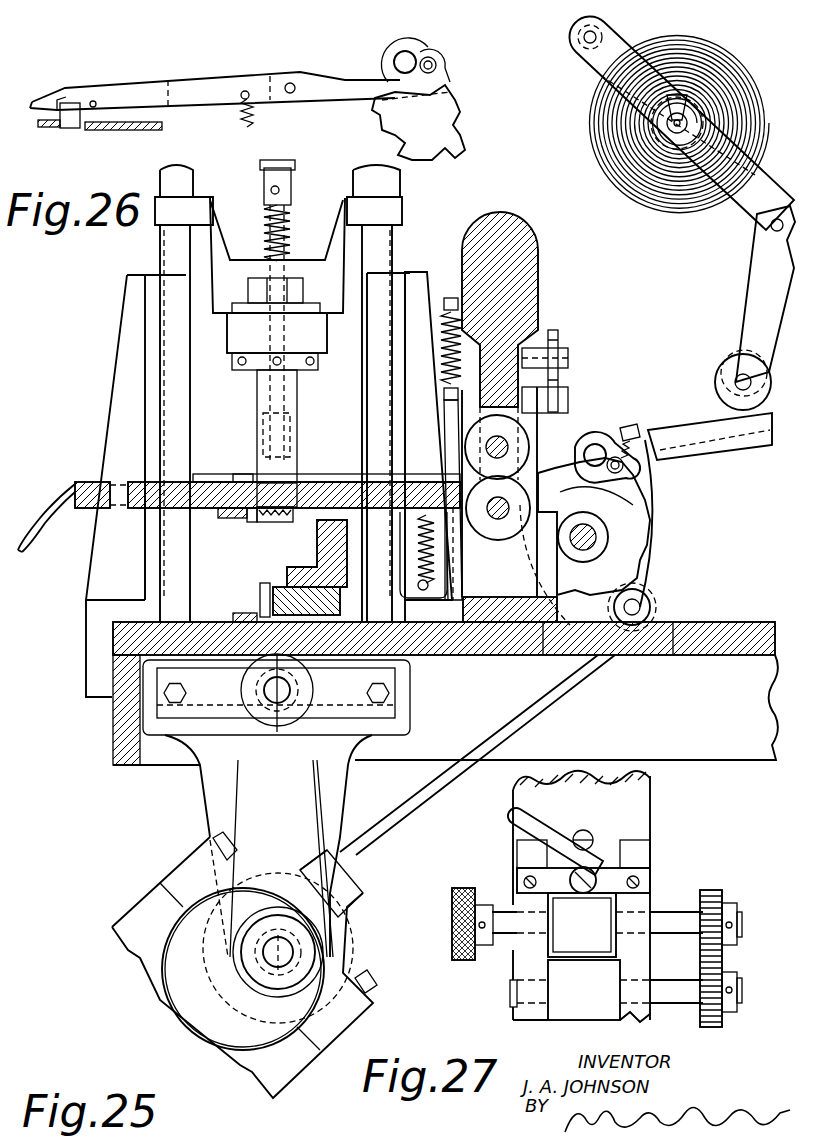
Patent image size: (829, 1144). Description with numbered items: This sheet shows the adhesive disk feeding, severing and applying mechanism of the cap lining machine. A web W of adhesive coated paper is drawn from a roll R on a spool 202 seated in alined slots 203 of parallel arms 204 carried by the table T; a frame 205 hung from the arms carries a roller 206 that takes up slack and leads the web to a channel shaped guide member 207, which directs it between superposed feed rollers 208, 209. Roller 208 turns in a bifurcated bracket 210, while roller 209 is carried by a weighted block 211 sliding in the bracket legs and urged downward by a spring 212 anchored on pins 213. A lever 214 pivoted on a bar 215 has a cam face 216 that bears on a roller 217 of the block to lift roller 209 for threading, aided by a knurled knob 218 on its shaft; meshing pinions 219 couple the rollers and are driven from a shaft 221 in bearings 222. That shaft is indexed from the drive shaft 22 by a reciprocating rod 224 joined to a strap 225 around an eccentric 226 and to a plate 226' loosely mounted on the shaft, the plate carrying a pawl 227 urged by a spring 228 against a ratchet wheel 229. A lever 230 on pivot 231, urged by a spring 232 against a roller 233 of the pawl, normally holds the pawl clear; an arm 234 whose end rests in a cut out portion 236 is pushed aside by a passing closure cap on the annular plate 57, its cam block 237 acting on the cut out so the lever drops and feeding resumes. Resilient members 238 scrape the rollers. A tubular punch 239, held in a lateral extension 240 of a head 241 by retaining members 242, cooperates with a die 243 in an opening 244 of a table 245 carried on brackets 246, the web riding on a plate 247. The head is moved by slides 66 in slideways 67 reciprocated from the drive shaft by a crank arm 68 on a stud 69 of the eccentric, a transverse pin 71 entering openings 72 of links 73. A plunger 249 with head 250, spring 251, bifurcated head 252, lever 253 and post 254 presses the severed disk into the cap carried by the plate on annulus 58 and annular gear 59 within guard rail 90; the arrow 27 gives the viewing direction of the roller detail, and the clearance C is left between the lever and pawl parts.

In FIG. 25, the drive shaft 22 is at (318, 971).
In FIG. 25, the arrow 27 is at (598, 381).
In FIG. 26, the annular plate 57 is at (123, 129).
In FIG. 25, the annular plate 57 is at (258, 523).
In FIG. 25, the annulus 58 is at (325, 551).
In FIG. 25, the annular gear 59 is at (292, 605).
In FIG. 25, the slides 66 is at (160, 247).
In FIG. 25, the slideways 67 is at (130, 352).
In FIG. 25, the crank arm 68 is at (260, 793).
In FIG. 25, the stud 69 is at (283, 953).
In FIG. 25, the transverse pin 71 is at (278, 698).
In FIG. 25, the alined openings 72 is at (297, 690).
In FIG. 25, the lever bars or links 73 is at (223, 710).
In FIG. 25, the annular guard rail 90 is at (263, 585).
In FIG. 25, the spool 202 is at (712, 52).
In FIG. 25, the slots 203 is at (667, 96).
In FIG. 25, the parallel arms 204 is at (733, 200).
In FIG. 25, the frame 205 is at (757, 296).
In FIG. 25, the roller 206 is at (733, 370).
In FIG. 25, the channel shaped guide member 207 is at (730, 433).
In FIG. 25, the feed roller 208 is at (502, 533).
In FIG. 27, the feed roller 208 is at (570, 1008).
In FIG. 25, the feed roller 209 is at (522, 438).
In FIG. 27, the feed roller 209 is at (575, 942).
In FIG. 25, the bifurcated bracket 210 is at (517, 604).
In FIG. 27, the bifurcated bracket 210 is at (647, 1017).
In FIG. 25, the weighted block 211 is at (530, 284).
In FIG. 27, the weighted block 211 is at (651, 807).
In FIG. 25, the spring 212 is at (420, 310).
In FIG. 25, the pins 213 is at (447, 333).
In FIG. 25, the lever 214 is at (555, 380).
In FIG. 27, the lever 214 is at (522, 822).
In FIG. 25, the bar 215 is at (552, 417).
In FIG. 27, the bar 215 is at (637, 872).
In FIG. 27, the cam face 216 is at (593, 868).
In FIG. 25, the roller 217 is at (533, 343).
In FIG. 27, the roller 217 is at (581, 838).
In FIG. 27, the knurled knob 218 is at (453, 893).
In FIG. 27, the pinions 219 is at (723, 947).
In FIG. 25, the shaft 221 is at (600, 537).
In FIG. 25, the bearings 222 is at (600, 553).
In FIG. 25, the reciprocating rod 224 is at (410, 836).
In FIG. 25, the strap 225 is at (185, 877).
In FIG. 25, the eccentric 226 is at (201, 969).
In FIG. 25, the plate 226' is at (658, 477).
In FIG. 26, the pawl 227 is at (418, 54).
In FIG. 25, the pawl 227 is at (628, 474).
In FIG. 25, the spring 228 is at (616, 428).
In FIG. 26, the ratchet wheel 229 is at (454, 135).
In FIG. 25, the ratchet wheel 229 is at (622, 525).
In FIG. 26, the lever 230 is at (140, 88).
In FIG. 25, the lever 230 is at (305, 480).
In FIG. 26, the pivot 231 is at (292, 83).
In FIG. 26, the spring 232 is at (256, 118).
In FIG. 25, the spring 232 is at (423, 564).
In FIG. 26, the roller 233 is at (443, 67).
In FIG. 25, the roller 233 is at (634, 453).
In FIG. 26, the arm 234 is at (67, 121).
In FIG. 25, the arm 234 is at (232, 522).
In FIG. 26, the cut out portion 236 is at (93, 101).
In FIG. 25, the cut out portion 236 is at (250, 470).
In FIG. 26, the cam edge block 237 is at (67, 90).
In FIG. 25, the resilient members 238 is at (447, 433).
In FIG. 25, the tubular punch 239 is at (297, 396).
In FIG. 25, the lateral extension 240 is at (235, 340).
In FIG. 25, the head 241 is at (223, 260).
In FIG. 25, the retaining members 242 is at (300, 293).
In FIG. 25, the die 243 is at (307, 480).
In FIG. 25, the opening 244 is at (238, 518).
In FIG. 25, the table 245 is at (140, 513).
In FIG. 25, the brackets 246 is at (157, 558).
In FIG. 25, the plate 247 is at (203, 470).
In FIG. 25, the plunger 249 is at (287, 227).
In FIG. 25, the head 250 is at (293, 423).
In FIG. 25, the spring 251 is at (288, 207).
In FIG. 25, the bifurcated head 252 is at (290, 197).
In FIG. 25, the lever 253 is at (270, 188).
In FIG. 25, the post 254 is at (287, 250).
In FIG. 25, the roll R is at (738, 71).
In FIG. 25, the web W is at (689, 406).
In FIG. 25, the table T is at (715, 625).
In FIG. 25, the clearance C is at (249, 548).